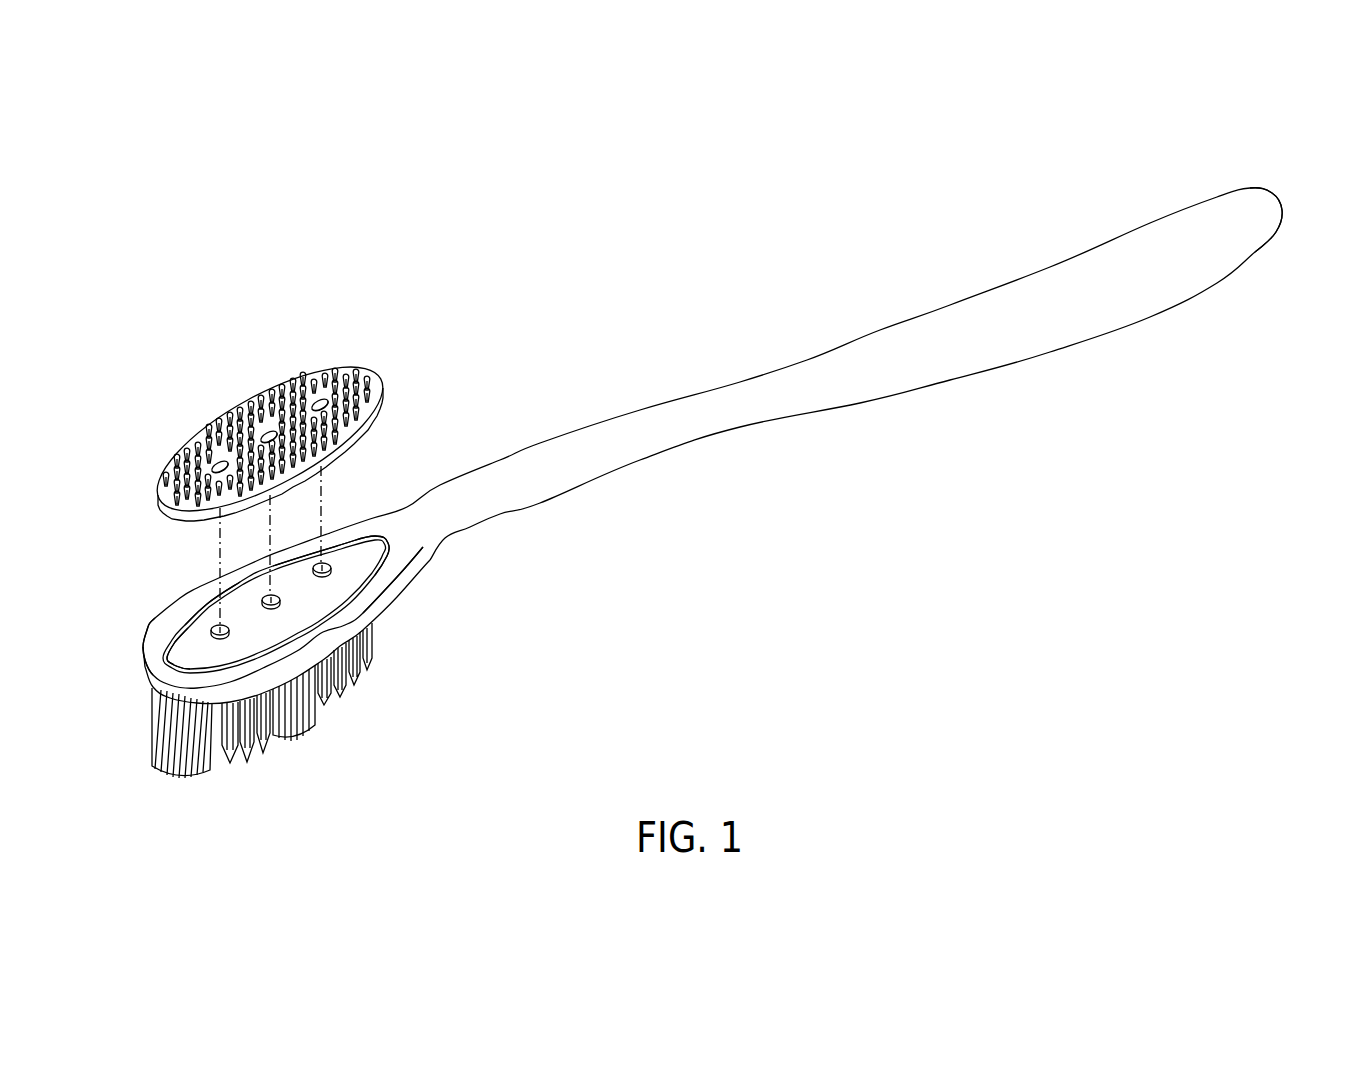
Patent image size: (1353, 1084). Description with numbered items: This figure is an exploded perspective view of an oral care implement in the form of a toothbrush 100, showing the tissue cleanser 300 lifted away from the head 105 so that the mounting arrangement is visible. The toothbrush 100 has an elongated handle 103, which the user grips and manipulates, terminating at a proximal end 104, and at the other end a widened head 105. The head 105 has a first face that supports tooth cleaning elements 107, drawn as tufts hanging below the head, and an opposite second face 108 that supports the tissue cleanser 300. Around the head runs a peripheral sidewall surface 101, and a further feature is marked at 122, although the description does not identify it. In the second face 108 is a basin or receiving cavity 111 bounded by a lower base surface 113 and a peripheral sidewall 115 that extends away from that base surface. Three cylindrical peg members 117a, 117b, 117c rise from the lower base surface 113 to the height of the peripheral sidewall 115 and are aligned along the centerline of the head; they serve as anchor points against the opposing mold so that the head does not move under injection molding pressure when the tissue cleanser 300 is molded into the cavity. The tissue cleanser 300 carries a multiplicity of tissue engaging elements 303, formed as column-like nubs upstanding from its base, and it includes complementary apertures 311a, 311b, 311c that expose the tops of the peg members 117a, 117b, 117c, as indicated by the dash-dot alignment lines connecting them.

The toothbrush 100 is at (834, 245).
The peripheral sidewall surface 101 is at (158, 688).
The handle 103 is at (948, 305).
The proximal end 104 is at (1283, 205).
The head 105 is at (392, 625).
The tooth cleaning elements 107 is at (307, 739).
The second face 108 is at (383, 522).
The receiving cavity 111 is at (345, 543).
The lower base surface 113 is at (178, 632).
The peripheral sidewall 115 is at (197, 603).
The peg member 117a is at (223, 640).
The peg member 117b is at (282, 603).
The peg member 117c is at (334, 569).
The rear surface of head 122 is at (124, 657).
The tissue cleanser 300 is at (294, 430).
The tissue engaging elements 303 is at (360, 368).
The aperture 311a is at (214, 458).
The aperture 311b is at (262, 418).
The aperture 311c is at (316, 374).